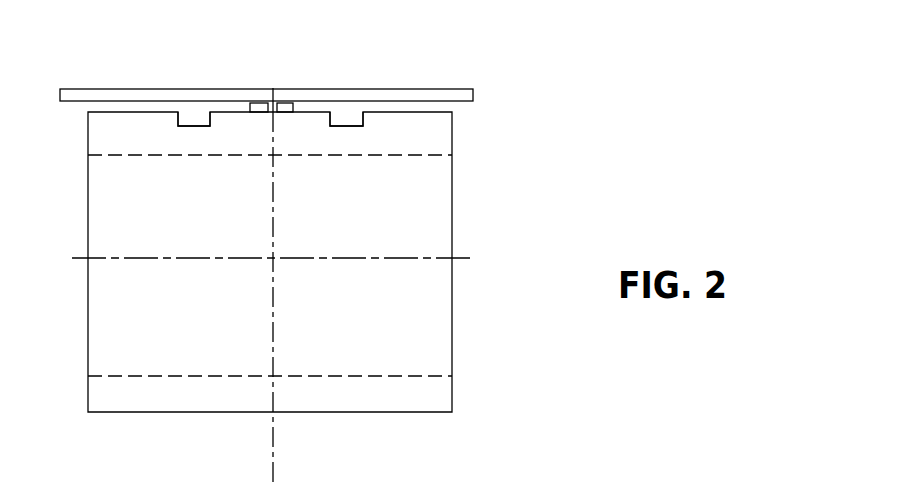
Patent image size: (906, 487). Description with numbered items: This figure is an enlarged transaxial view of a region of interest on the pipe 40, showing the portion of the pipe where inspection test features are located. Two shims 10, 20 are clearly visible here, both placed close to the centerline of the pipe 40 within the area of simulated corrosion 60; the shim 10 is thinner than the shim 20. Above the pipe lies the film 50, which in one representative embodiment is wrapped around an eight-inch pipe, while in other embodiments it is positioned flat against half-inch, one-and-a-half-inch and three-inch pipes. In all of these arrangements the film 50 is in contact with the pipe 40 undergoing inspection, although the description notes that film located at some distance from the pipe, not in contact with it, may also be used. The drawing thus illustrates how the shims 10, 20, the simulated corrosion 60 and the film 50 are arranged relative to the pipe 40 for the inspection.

The shim 10 is at (176, 62).
The shim 20 is at (359, 67).
The pipe 40 is at (452, 213).
The film 50 is at (425, 69).
The area of simulated corrosion 60 is at (350, 128).